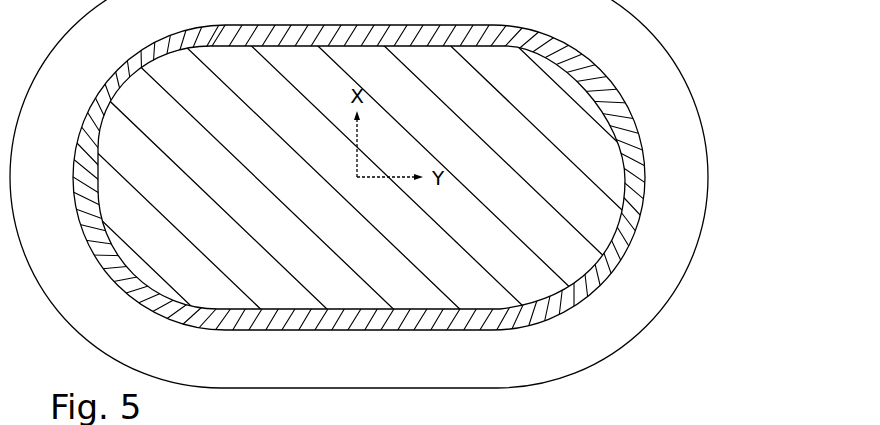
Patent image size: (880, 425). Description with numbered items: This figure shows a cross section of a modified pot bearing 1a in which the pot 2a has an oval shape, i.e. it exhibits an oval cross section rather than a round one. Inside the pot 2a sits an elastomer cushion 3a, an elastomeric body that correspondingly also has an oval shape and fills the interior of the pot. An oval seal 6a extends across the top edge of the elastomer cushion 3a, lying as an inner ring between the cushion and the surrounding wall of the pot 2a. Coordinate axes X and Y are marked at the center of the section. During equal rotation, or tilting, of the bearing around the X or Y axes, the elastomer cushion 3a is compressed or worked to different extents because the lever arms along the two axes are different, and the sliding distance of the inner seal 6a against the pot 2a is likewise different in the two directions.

The pot bearing 1a is at (630, 424).
The pot 2a is at (662, 131).
The elastomer cushion 3a is at (563, 245).
The seal 6a is at (633, 190).